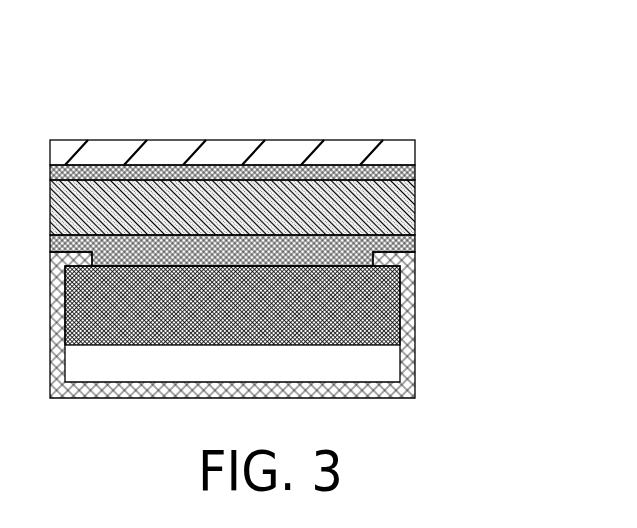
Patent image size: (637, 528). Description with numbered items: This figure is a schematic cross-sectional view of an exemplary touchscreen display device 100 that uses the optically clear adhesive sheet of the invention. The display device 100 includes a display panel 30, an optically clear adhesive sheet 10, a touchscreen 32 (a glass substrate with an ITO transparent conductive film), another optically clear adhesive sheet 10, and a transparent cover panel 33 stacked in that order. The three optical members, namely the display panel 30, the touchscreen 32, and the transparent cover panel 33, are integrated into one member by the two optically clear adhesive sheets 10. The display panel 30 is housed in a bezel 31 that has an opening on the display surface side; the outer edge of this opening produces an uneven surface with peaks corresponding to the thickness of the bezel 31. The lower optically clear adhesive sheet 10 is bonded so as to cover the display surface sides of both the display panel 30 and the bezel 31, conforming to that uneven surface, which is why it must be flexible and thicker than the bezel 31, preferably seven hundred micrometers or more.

The display device 100 is at (488, 60).
The transparent cover panel 33 is at (405, 157).
The optically clear adhesive sheet 10 is at (405, 173).
The touchscreen 32 is at (405, 208).
The bezel 31 is at (410, 355).
The display panel 30 is at (383, 302).